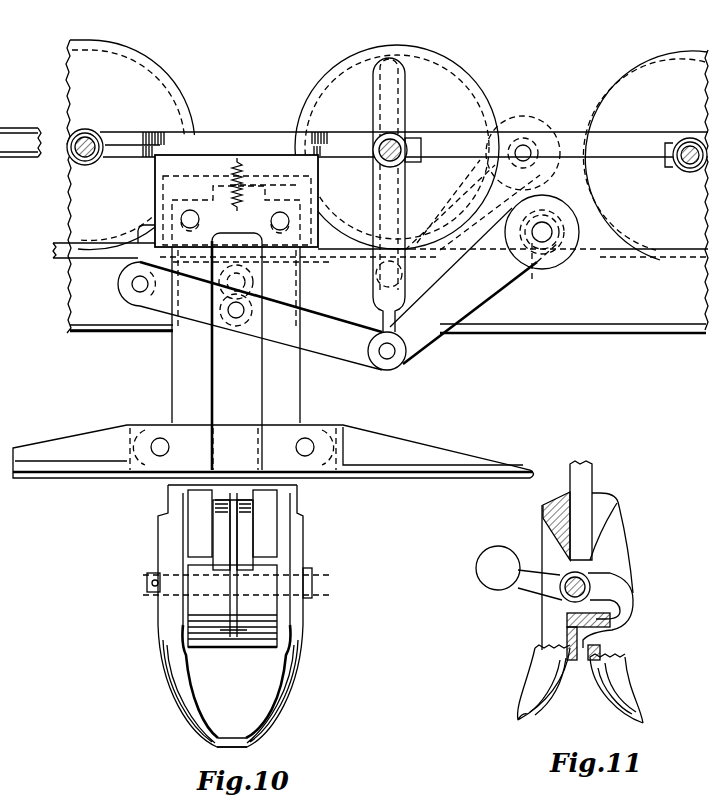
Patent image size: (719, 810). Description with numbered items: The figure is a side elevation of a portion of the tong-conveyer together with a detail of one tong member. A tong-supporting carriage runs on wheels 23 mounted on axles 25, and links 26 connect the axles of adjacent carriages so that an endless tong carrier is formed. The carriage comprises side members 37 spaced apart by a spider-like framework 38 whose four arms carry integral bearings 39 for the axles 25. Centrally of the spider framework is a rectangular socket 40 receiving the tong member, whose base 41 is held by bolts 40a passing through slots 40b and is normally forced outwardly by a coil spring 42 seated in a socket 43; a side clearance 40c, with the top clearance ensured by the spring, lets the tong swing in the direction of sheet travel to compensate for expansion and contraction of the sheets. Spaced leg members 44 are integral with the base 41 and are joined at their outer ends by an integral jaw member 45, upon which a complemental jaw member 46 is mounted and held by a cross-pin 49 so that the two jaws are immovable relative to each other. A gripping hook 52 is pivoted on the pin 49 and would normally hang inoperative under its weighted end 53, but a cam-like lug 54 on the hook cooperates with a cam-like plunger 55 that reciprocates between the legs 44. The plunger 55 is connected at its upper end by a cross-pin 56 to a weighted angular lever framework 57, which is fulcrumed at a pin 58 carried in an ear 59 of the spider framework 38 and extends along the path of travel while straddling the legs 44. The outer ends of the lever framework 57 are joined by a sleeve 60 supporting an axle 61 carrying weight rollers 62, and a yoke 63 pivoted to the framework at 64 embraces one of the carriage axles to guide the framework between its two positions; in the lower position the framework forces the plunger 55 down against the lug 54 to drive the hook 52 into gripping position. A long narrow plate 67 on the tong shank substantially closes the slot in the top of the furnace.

In FIG. 10, the wheels 23 is at (80, 83).
In FIG. 10, the axles 25 is at (86, 140).
In FIG. 10, the links 26 is at (573, 133).
In FIG. 10, the side members 37 is at (305, 133).
In FIG. 10, the spider-like framework 38 is at (127, 150).
In FIG. 10, the bearings 39 is at (103, 132).
In FIG. 10, the socket 40 is at (270, 170).
In FIG. 10, the bolts 40a is at (190, 218).
In FIG. 10, the slots 40b is at (148, 229).
In FIG. 10, the clearance 40c is at (270, 190).
In FIG. 10, the base 41 is at (214, 178).
In FIG. 10, the coil spring 42 is at (242, 150).
In FIG. 10, the socket 43 is at (238, 160).
In FIG. 10, the leg members 44 is at (190, 350).
In FIG. 11, the jaw member 45 is at (547, 670).
In FIG. 10, the jaw member 46 is at (162, 663).
In FIG. 11, the jaw member 46 is at (615, 670).
In FIG. 10, the cross-pin 49 is at (145, 588).
In FIG. 11, the cross-pin 49 is at (590, 593).
In FIG. 10, the gripping hook 52 is at (255, 570).
In FIG. 11, the gripping hook 52 is at (597, 582).
In FIG. 11, the weighted end 53 is at (493, 557).
In FIG. 10, the cam-like lug 54 is at (232, 527).
In FIG. 11, the cam-like lug 54 is at (608, 530).
In FIG. 10, the cam-like plunger 55 is at (238, 383).
In FIG. 11, the cam-like plunger 55 is at (580, 483).
In FIG. 10, the cross-pin 56 is at (237, 310).
In FIG. 10, the lever framework 57 is at (430, 322).
In FIG. 10, the fulcrum pin 58 is at (132, 285).
In FIG. 10, the ear 59 is at (58, 260).
In FIG. 10, the sleeve 60 is at (531, 272).
In FIG. 10, the axle 61 is at (545, 232).
In FIG. 10, the weight rollers 62 is at (12, 174).
In FIG. 10, the yoke 63 is at (373, 295).
In FIG. 10, the pivot 64 is at (387, 360).
In FIG. 10, the plate 67 is at (420, 472).